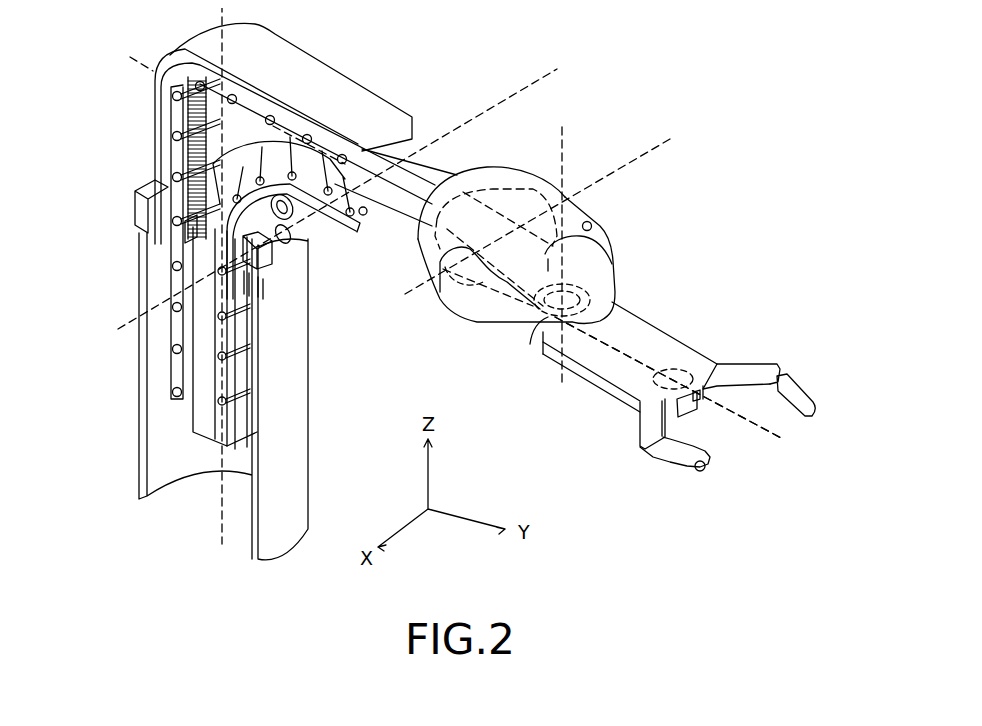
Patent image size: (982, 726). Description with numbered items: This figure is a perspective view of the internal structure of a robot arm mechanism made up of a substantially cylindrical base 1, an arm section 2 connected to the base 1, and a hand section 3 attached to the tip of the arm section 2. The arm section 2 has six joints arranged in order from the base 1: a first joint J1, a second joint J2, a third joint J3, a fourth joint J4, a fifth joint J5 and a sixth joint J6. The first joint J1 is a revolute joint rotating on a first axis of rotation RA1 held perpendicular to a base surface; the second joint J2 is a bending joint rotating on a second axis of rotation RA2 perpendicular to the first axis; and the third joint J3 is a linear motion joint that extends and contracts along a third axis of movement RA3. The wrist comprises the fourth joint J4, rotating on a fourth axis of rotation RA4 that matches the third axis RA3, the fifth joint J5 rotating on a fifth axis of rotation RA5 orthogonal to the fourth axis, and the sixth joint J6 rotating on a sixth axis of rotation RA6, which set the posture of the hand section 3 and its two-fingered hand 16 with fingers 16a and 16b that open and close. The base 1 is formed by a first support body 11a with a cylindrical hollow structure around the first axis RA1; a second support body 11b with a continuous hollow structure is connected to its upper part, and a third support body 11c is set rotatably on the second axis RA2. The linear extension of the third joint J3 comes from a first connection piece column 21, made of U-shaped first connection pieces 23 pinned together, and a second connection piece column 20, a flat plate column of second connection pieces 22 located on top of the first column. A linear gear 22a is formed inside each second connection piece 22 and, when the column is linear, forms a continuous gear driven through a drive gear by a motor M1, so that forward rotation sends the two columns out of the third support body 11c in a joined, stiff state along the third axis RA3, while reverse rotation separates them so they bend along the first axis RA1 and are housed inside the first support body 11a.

The base 1 is at (101, 309).
The arm section 2 is at (412, 90).
The hand section 3 is at (659, 310).
The first support body 11a is at (300, 413).
The second support body 11b is at (155, 126).
The third support body 11c is at (350, 87).
The two-fingered hand 16 is at (670, 503).
The finger 16a is at (703, 472).
The finger 16b is at (738, 368).
The second connection piece column 20 is at (170, 110).
The first connection piece column 21 is at (185, 417).
The second connection piece 22 is at (173, 163).
The linear gear 22a is at (193, 152).
The first connection piece 23 is at (240, 377).
The first joint J1 is at (135, 207).
The second joint J2 is at (293, 257).
The third joint J3 is at (440, 145).
The fourth joint J4 is at (477, 181).
The fifth joint J5 is at (440, 303).
The sixth joint J6 is at (537, 322).
The motor M1 is at (300, 230).
The first axis of rotation RA1 is at (217, 299).
The second axis of rotation RA2 is at (358, 193).
The third axis of movement RA3 is at (701, 394).
The fourth axis of rotation RA4 is at (669, 378).
The fifth axis of rotation RA5 is at (558, 206).
The sixth axis of rotation RA6 is at (563, 243).